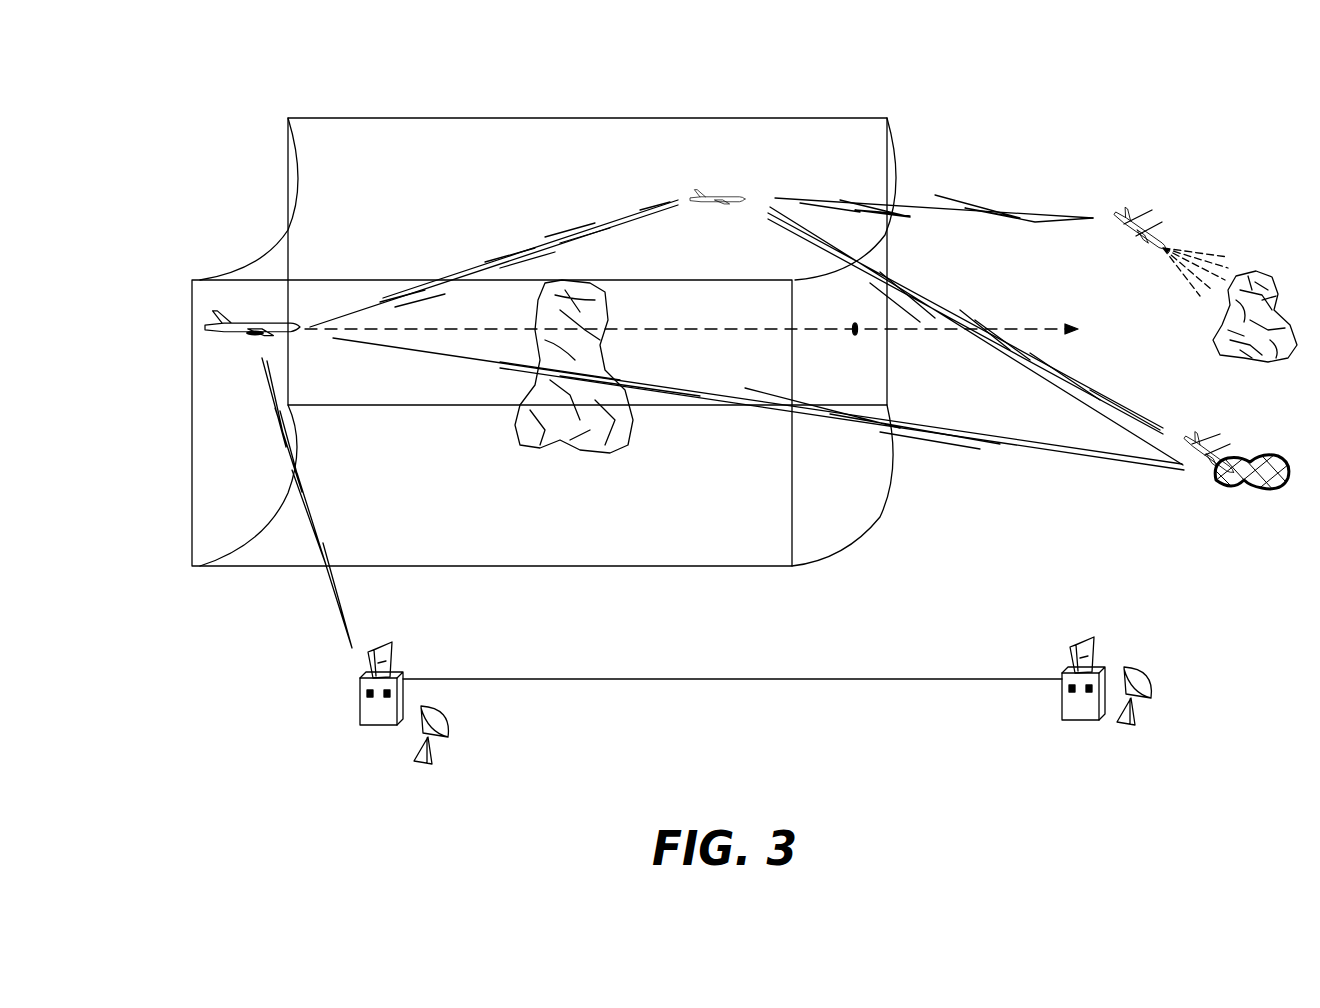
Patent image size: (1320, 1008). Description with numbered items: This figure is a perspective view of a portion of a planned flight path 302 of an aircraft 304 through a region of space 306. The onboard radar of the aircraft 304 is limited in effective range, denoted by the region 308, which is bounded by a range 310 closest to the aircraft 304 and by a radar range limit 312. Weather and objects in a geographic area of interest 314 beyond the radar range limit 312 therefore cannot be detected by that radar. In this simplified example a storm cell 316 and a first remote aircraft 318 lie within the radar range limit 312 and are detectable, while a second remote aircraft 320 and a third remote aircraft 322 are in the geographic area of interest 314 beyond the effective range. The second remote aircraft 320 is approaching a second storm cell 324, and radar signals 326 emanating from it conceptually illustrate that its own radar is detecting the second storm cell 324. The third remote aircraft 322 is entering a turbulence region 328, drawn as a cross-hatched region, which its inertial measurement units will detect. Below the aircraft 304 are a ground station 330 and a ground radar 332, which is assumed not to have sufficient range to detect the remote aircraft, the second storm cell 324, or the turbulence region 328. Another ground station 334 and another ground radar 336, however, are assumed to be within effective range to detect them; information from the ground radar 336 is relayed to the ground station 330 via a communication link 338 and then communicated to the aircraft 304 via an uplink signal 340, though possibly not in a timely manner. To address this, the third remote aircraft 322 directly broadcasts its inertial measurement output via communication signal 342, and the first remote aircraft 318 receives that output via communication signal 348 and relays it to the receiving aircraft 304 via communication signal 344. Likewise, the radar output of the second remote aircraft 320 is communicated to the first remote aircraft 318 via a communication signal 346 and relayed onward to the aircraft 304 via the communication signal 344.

The planned flight path 302 is at (690, 335).
The aircraft 304 is at (215, 352).
The region of space 306 is at (255, 152).
The region 308 is at (593, 569).
The range 310 is at (300, 185).
The radar range limit 312 is at (880, 520).
The geographic area of interest 314 is at (1078, 152).
The storm cell 316 is at (632, 472).
The first remote aircraft 318 is at (710, 178).
The second remote aircraft 320 is at (1145, 212).
The third remote aircraft 322 is at (1180, 480).
The second storm cell 324 is at (1258, 370).
The radar signals 326 is at (1222, 241).
The turbulence region 328 is at (1247, 488).
The ground station 330 is at (347, 710).
The ground radar 332 is at (410, 770).
The another ground station 334 is at (1047, 705).
The another ground radar 336 is at (1115, 730).
The communication link 338 is at (738, 685).
The uplink signal 340 is at (318, 605).
The communication signal 342 is at (918, 405).
The communication signal 344 is at (555, 213).
The communication signal 346 is at (955, 190).
The communication signal 348 is at (930, 293).